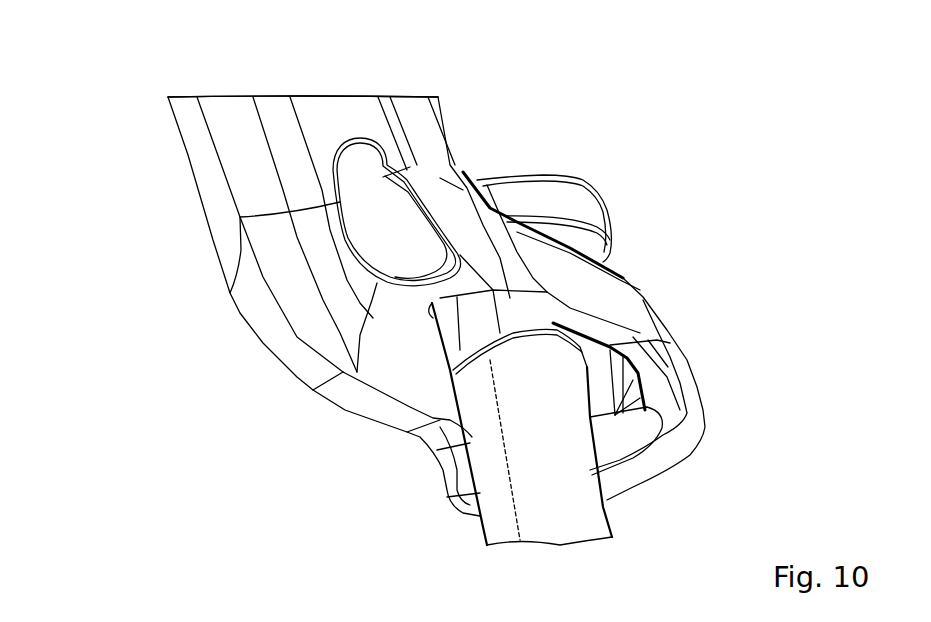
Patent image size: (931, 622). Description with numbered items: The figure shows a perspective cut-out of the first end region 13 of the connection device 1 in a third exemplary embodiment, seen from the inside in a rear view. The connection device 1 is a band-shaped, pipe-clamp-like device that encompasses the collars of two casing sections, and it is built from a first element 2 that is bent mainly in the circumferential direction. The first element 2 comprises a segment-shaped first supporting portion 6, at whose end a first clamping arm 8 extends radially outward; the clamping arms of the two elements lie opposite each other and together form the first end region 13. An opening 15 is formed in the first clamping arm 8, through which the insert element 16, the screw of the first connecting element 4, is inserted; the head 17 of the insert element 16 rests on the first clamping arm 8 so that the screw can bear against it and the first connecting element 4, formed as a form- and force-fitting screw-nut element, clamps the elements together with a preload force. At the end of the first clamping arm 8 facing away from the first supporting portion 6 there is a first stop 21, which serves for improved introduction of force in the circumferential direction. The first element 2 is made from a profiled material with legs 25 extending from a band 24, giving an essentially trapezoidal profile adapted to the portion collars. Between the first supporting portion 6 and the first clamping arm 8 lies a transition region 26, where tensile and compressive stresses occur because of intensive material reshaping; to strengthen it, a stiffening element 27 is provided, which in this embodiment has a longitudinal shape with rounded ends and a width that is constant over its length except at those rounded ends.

The connection device 1 is at (757, 167).
The first element 2 is at (162, 127).
The first connecting element 4 is at (533, 137).
The first supporting portion 6 is at (236, 120).
The first clamping arm 8 is at (635, 303).
The first end region 13 is at (645, 117).
The opening 15 is at (432, 308).
The insert element 16 is at (467, 533).
The head 17 is at (563, 180).
The first stop 21 is at (697, 393).
The band 24 is at (335, 117).
The legs 25 is at (238, 160).
The transition regions 26 is at (197, 340).
The stiffening element 27 is at (373, 230).